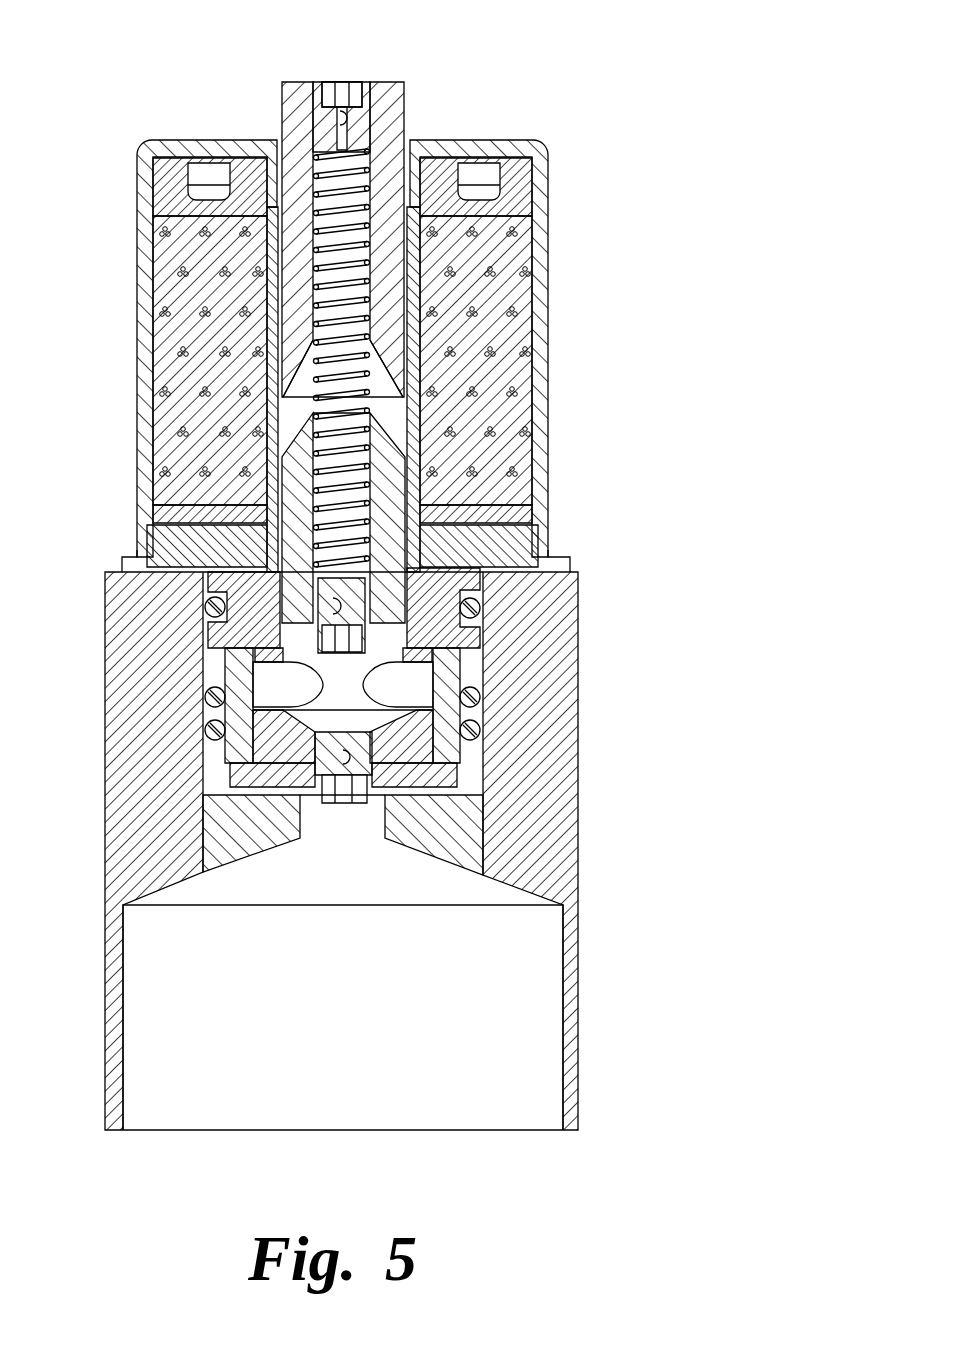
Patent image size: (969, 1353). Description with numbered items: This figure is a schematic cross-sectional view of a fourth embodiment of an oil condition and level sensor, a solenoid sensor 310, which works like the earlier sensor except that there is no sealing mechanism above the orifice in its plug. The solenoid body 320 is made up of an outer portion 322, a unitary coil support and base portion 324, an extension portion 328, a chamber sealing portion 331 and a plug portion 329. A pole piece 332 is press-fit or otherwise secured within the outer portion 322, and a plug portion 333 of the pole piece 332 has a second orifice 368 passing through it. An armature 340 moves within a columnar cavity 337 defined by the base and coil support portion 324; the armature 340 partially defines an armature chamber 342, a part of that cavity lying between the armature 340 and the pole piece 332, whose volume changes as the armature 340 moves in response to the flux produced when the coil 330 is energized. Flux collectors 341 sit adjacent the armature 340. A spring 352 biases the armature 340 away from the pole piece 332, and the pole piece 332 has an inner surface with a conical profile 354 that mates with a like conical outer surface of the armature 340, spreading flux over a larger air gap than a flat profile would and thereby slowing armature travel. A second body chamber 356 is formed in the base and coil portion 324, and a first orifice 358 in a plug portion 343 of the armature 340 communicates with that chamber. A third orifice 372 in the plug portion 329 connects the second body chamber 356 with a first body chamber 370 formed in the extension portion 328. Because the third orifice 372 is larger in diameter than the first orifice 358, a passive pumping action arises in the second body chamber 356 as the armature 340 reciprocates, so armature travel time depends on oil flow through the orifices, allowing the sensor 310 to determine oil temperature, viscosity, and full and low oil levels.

The solenoid sensor 310 is at (624, 50).
The solenoid body 320 is at (615, 348).
The outer portion 322 is at (540, 157).
The unitary coil support and base portion 324 is at (483, 590).
The extension portion 328 is at (533, 702).
The plug portion 329 is at (390, 745).
The coil 330 is at (200, 352).
The chamber sealing portion 331 is at (447, 678).
The pole piece 332 is at (387, 200).
The plug portion 333 is at (360, 125).
The columnar cavity 337 is at (395, 375).
The armature 340 is at (447, 480).
The flux collectors 341 is at (320, 600).
The armature chamber 342 is at (397, 415).
The plug portion 343 is at (157, 532).
The spring 352 is at (343, 180).
The conical profile 354 is at (383, 390).
The second body chamber 356 is at (347, 683).
The first orifice 358 is at (247, 627).
The second orifice 368 is at (340, 110).
The first body chamber 370 is at (368, 1027).
The third orifice 372 is at (350, 755).